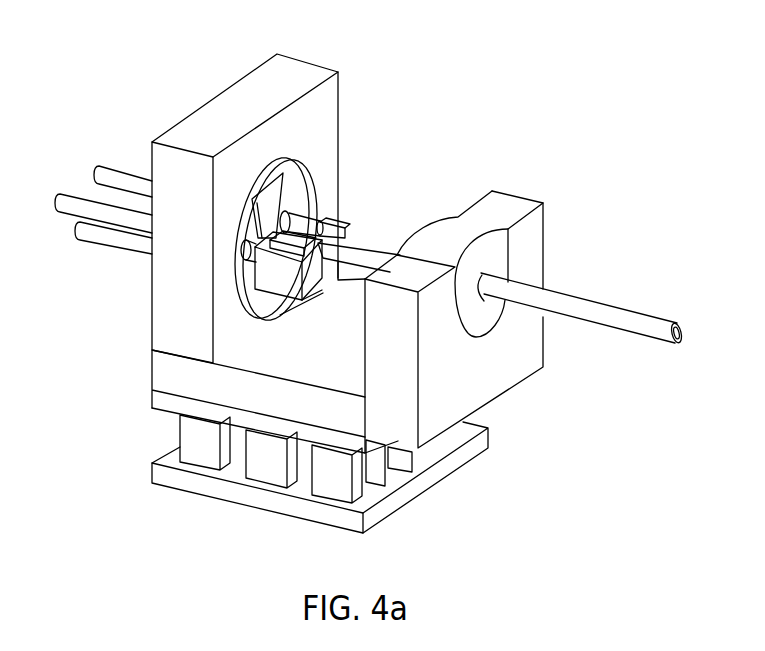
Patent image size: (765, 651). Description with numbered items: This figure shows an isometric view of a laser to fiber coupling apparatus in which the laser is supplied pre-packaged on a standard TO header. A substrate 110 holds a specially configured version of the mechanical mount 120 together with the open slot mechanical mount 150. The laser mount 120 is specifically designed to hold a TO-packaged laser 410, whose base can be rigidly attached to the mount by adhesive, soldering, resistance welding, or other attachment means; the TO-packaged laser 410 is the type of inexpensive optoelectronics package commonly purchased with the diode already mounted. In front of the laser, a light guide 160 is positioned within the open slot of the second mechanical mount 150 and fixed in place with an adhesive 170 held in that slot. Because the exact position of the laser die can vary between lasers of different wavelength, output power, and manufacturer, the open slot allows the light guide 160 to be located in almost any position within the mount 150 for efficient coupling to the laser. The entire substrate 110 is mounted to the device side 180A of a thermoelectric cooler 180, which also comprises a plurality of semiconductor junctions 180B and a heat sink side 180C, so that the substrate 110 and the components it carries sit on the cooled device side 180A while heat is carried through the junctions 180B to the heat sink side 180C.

The substrate 110 is at (175, 375).
The mechanical mount 120 is at (273, 87).
The second mechanical mount 150 is at (530, 245).
The light guide 160 is at (613, 293).
The adhesive 170 is at (473, 313).
The thermoelectric cooler 180 is at (311, 486).
The device side 180A is at (152, 408).
The semiconductor junctions 180B is at (267, 463).
The heat sink side 180C is at (312, 512).
The TO-packaged laser 410 is at (323, 175).